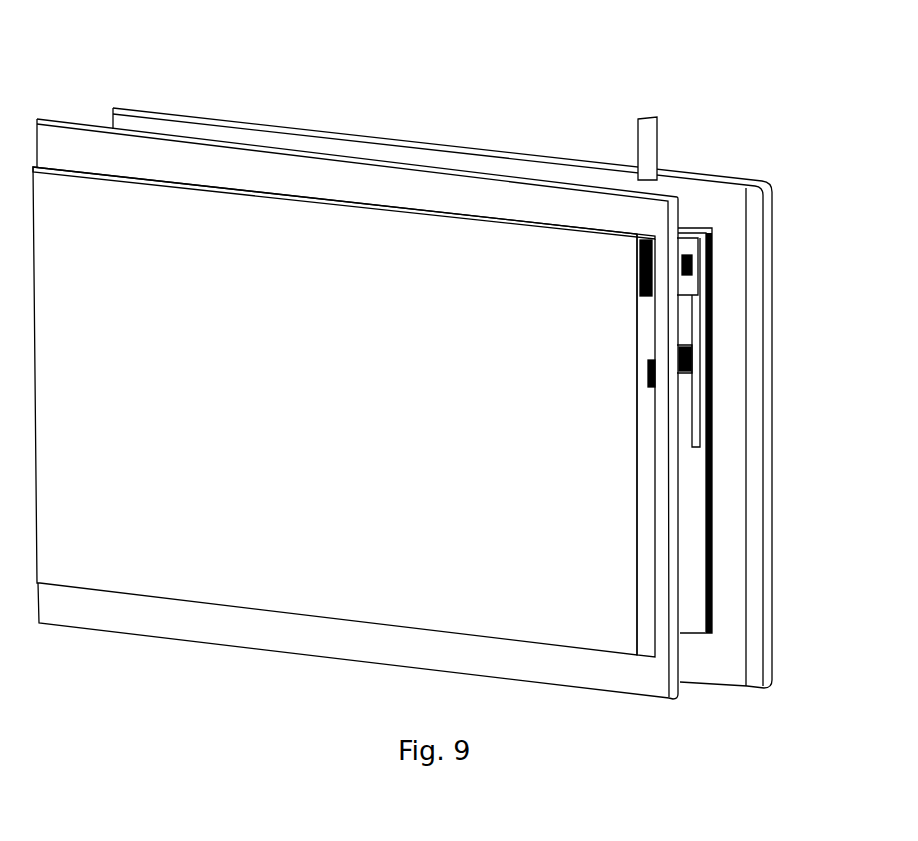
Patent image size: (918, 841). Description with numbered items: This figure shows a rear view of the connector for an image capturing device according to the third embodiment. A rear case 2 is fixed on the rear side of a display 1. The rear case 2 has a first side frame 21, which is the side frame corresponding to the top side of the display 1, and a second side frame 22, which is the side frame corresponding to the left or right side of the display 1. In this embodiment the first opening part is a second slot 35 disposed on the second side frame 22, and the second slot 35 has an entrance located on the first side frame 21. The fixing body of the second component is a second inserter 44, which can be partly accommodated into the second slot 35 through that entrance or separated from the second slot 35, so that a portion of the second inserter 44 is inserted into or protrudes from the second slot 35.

The display 1 is at (772, 660).
The rear case 2 is at (115, 218).
The first side frame 21 is at (313, 205).
The second side frame 22 is at (650, 570).
The second slot 35 is at (655, 263).
The second inserter 44 is at (655, 155).